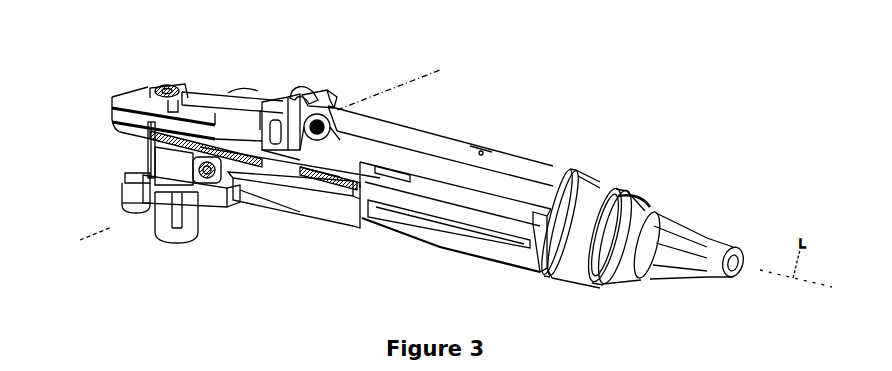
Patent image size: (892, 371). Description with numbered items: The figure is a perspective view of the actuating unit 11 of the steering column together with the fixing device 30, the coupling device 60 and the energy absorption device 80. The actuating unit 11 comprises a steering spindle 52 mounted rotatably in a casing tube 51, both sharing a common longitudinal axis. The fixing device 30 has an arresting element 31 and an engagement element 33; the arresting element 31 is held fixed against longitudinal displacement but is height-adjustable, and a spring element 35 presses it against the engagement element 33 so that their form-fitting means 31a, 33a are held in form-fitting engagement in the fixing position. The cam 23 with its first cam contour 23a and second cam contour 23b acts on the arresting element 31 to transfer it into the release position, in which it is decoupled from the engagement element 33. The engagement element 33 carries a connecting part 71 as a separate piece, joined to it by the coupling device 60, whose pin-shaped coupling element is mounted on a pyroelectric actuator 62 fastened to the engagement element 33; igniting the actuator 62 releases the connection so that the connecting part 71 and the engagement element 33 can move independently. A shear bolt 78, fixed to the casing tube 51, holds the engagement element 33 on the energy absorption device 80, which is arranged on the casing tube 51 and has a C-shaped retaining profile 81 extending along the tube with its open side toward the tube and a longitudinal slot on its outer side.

The actuating unit 11 is at (500, 165).
The cam 23 is at (341, 110).
The first cam contour 23a is at (297, 97).
The second cam contour 23b is at (321, 92).
The fixing device 30 is at (357, 81).
The arresting element 31 is at (264, 122).
The form-fitting means 31a is at (261, 173).
The engagement element 33 is at (313, 195).
The form-fitting means 33a is at (228, 170).
The spring element 35 is at (214, 100).
The casing tube 51 is at (466, 148).
The steering spindle 52 is at (631, 224).
The coupling device 60 is at (134, 240).
The pyroelectric actuator 62 is at (181, 230).
The connecting part 71 is at (177, 158).
The shear bolt 78 is at (122, 203).
The energy absorption device 80 is at (438, 255).
The retaining profile 81 is at (390, 230).